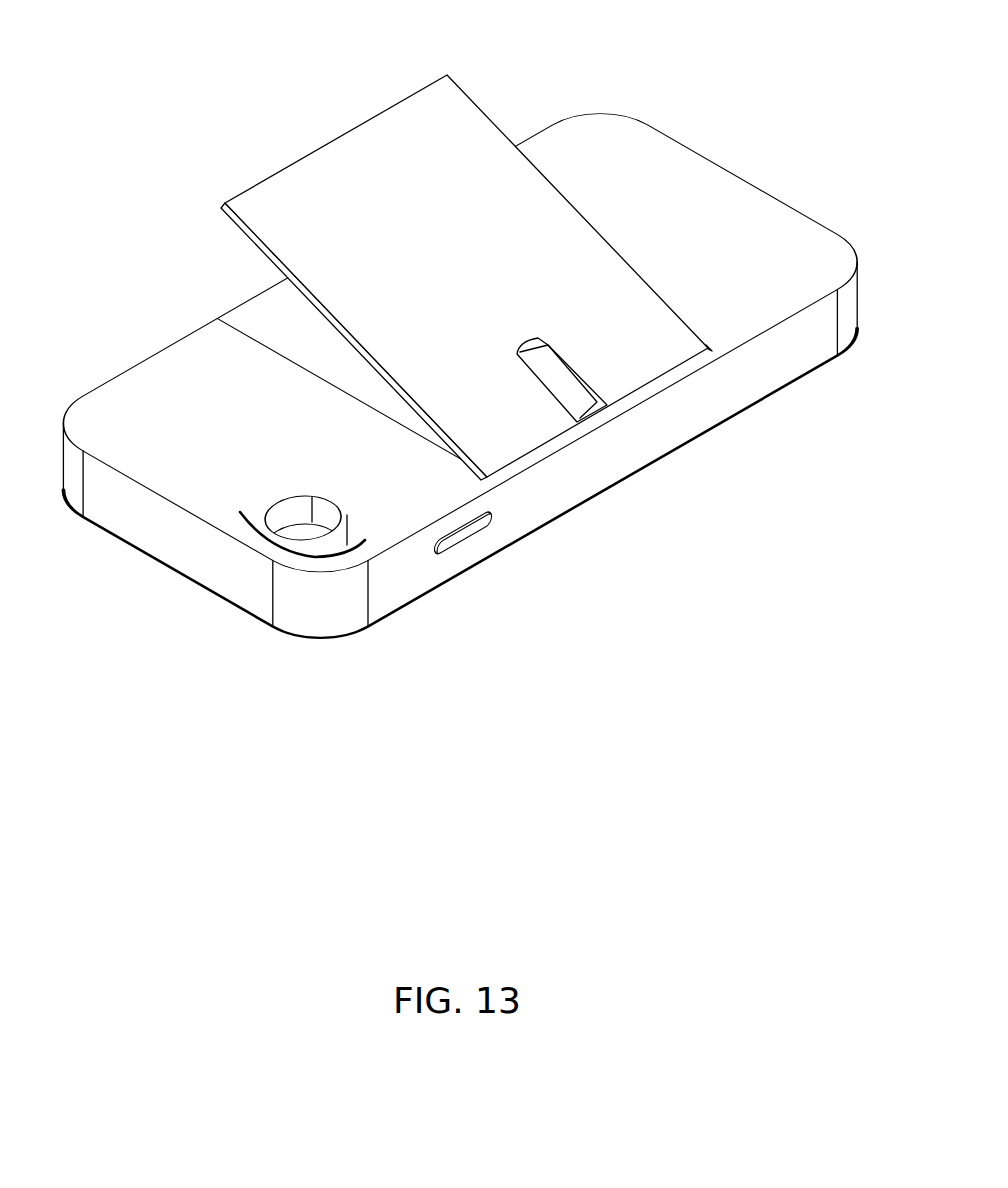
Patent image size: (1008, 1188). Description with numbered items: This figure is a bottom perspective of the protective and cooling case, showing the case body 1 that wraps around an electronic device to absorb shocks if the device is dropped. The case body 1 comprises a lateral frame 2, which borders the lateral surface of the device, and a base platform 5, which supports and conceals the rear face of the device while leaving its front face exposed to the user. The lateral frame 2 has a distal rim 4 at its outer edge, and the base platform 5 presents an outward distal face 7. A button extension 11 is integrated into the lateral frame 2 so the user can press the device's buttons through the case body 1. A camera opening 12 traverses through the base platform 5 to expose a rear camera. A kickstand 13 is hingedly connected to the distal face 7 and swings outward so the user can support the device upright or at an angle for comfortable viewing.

The case body 1 is at (168, 55).
The lateral frame 2 is at (621, 505).
The distal rim 4 is at (297, 636).
The base platform 5 is at (160, 300).
The distal face 7 is at (229, 425).
The button extension 11 is at (468, 538).
The camera opening 12 is at (297, 508).
The kickstand 13 is at (466, 107).